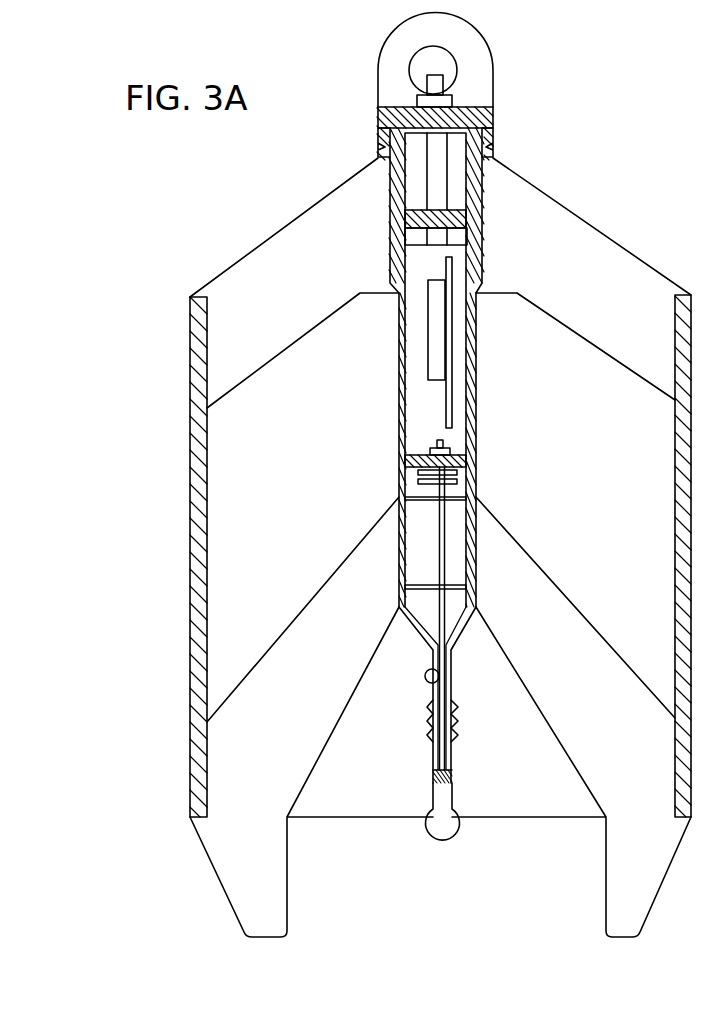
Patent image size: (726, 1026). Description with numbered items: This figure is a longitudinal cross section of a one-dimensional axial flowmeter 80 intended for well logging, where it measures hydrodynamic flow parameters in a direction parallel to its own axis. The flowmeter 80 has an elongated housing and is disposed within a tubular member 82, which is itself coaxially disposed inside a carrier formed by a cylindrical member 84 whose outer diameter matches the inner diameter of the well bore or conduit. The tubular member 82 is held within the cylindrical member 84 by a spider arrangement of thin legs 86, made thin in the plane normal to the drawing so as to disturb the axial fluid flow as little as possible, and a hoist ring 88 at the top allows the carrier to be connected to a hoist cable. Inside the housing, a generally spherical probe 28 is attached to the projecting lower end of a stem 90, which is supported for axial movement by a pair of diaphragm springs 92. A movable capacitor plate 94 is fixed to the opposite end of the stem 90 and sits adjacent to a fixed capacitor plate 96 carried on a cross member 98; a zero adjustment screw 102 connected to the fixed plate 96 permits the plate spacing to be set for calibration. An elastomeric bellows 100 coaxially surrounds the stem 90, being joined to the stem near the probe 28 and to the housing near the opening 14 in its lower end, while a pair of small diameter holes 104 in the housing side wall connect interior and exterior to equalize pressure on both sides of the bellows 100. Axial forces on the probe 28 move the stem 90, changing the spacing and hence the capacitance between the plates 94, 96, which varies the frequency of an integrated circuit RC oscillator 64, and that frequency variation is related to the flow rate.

The hoist ring 88 is at (483, 57).
The legs 86 is at (545, 199).
The cylindrical member 84 is at (190, 468).
The tubular member 82 is at (472, 320).
The integrated circuit RC oscillator 64 is at (430, 312).
The zero adjustment screw 102 is at (453, 445).
The cross member 98 is at (410, 460).
The fixed capacitor plate 96 is at (457, 472).
The movable capacitor plate 94 is at (457, 482).
The diaphragm springs 92 is at (407, 500).
The stem 90 is at (443, 540).
The one-dimensional axial flowmeter 80 is at (422, 623).
The opening 14 is at (453, 697).
The small diameter holes 104 is at (440, 672).
The elastomeric bellows 100 is at (458, 740).
The probe 28 is at (445, 840).